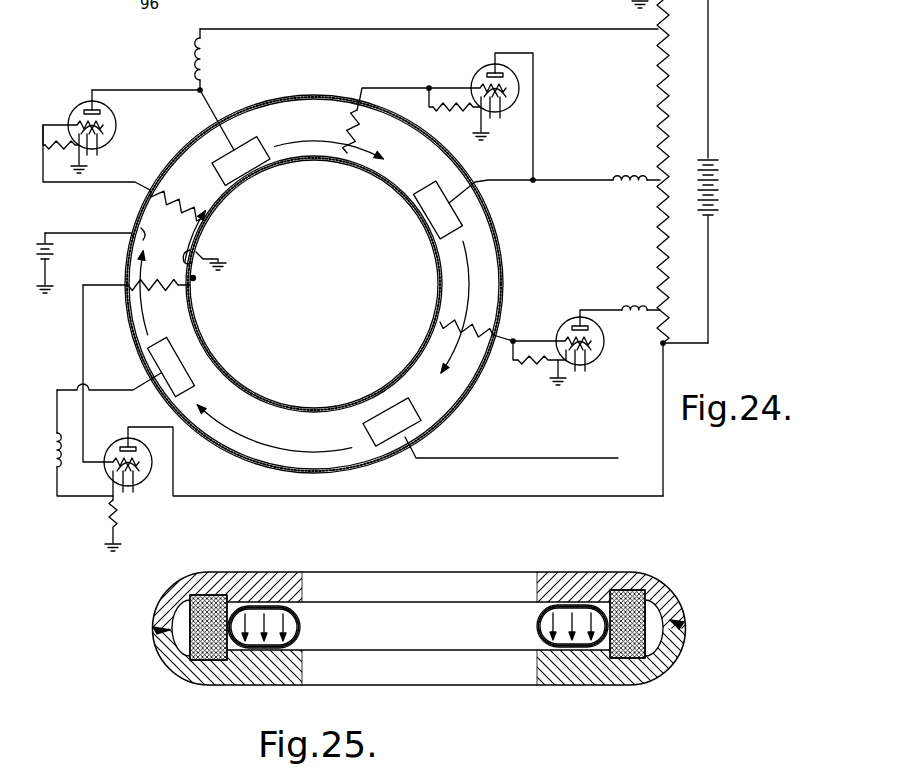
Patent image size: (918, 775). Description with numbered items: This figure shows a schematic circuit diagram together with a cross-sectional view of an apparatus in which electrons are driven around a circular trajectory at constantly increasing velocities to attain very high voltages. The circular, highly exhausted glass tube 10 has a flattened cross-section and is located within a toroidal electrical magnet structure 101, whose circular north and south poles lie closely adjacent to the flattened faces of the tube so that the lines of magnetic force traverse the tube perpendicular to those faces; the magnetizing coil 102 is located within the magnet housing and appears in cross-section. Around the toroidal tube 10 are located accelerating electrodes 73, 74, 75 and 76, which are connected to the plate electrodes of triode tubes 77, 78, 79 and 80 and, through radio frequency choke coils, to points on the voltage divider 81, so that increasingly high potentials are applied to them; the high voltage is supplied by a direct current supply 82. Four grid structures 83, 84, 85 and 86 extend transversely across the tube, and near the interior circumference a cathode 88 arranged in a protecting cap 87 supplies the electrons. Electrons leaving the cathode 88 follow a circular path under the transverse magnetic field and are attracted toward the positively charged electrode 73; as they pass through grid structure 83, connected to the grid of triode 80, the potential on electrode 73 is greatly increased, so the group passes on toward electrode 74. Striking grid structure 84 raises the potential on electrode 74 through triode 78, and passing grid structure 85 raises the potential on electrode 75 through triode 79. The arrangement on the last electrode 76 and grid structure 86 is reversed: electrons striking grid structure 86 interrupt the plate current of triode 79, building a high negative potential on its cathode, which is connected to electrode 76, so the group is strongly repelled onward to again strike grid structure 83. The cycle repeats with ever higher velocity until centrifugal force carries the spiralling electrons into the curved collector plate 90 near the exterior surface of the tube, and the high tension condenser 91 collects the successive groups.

In FIG. 24, the circular highly exhausted glass tube 10 is at (300, 97).
In FIG. 24, the accelerating electrode 73 is at (252, 141).
In FIG. 24, the accelerating electrode 74 is at (436, 182).
In FIG. 24, the accelerating electrode 75 is at (380, 426).
In FIG. 24, the accelerating electrode 76 is at (192, 381).
In FIG. 24, the triode tube 77 is at (115, 117).
In FIG. 24, the triode tube 78 is at (482, 73).
In FIG. 24, the triode tube 79 is at (576, 345).
In FIG. 24, the triode tube 80 is at (118, 441).
In FIG. 24, the voltage divider 81 is at (658, 107).
In FIG. 24, the direct current supply 82 is at (720, 182).
In FIG. 24, the grid structure 83 is at (190, 207).
In FIG. 24, the grid structure 84 is at (358, 135).
In FIG. 24, the grid structure 85 is at (440, 322).
In FIG. 24, the grid structure 86 is at (165, 292).
In FIG. 24, the protecting cap 87 is at (198, 251).
In FIG. 24, the cathode 88 is at (195, 278).
In FIG. 24, the curved collector plate 90 is at (131, 232).
In FIG. 24, the high tension condenser 91 is at (55, 242).
In FIG. 25, the toroidal electrical magnet structure 101 is at (690, 657).
In FIG. 25, the magnetizing coil 102 is at (648, 661).